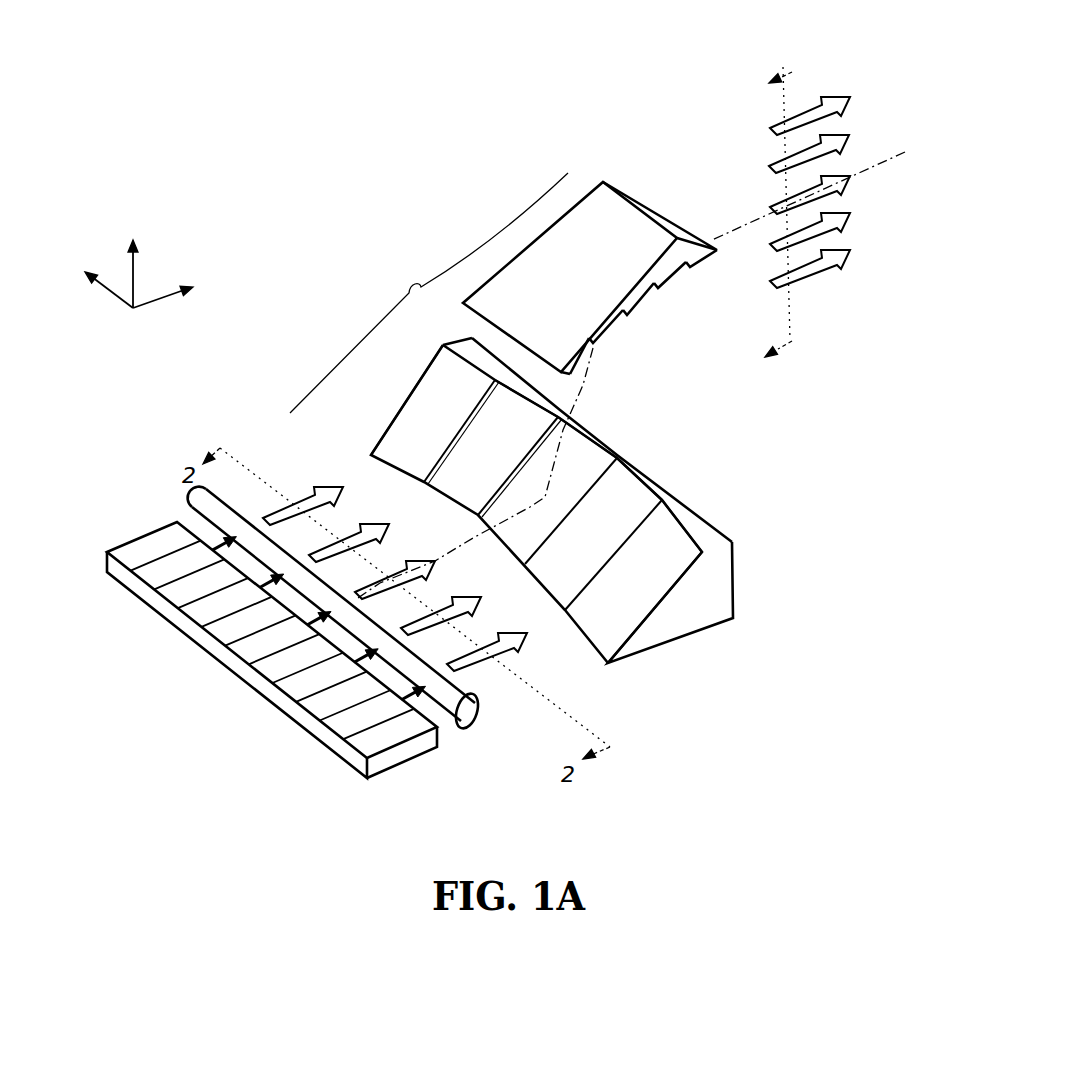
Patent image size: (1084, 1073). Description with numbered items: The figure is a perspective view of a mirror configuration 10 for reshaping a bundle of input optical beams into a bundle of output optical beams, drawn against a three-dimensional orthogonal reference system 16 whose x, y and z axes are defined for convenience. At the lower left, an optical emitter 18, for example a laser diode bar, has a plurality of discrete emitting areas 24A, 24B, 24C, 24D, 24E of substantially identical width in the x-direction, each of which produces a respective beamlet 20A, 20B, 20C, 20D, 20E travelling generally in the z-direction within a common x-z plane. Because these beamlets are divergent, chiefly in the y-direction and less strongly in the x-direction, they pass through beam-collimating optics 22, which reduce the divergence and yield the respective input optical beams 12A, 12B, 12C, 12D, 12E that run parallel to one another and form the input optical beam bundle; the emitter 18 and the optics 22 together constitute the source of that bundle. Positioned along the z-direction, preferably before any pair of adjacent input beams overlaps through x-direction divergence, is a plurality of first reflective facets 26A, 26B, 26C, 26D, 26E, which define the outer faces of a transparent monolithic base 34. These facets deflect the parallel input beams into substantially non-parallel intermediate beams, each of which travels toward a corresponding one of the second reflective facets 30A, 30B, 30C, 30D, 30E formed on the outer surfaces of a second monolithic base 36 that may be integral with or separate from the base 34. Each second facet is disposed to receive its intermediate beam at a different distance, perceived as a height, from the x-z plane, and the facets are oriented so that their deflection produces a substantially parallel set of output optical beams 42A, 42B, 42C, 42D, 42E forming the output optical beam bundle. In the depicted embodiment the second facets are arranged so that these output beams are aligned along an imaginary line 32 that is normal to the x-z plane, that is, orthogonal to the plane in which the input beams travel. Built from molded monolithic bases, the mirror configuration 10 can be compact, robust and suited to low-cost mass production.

The mirror configuration 10 is at (429, 293).
The input optical beam 12A is at (329, 487).
The input optical beam 12B is at (375, 524).
The input optical beam 12C is at (421, 561).
The input optical beam 12D is at (497, 587).
The input optical beam 12E is at (513, 633).
The orthogonal reference system 16 is at (137, 330).
The optical emitter 18 is at (157, 540).
The beamlet 20A is at (152, 578).
The beamlet 20B is at (200, 618).
The beamlet 20C is at (243, 653).
The beamlet 20D is at (290, 693).
The beamlet 20E is at (340, 730).
The beam-collimating optics 22 is at (466, 704).
The emitting area 24A is at (214, 548).
The emitting area 24B is at (261, 585).
The emitting area 24C is at (309, 623).
The emitting area 24D is at (356, 660).
The emitting area 24E is at (403, 698).
The first reflective facet 26A is at (460, 377).
The first reflective facet 26B is at (495, 437).
The first reflective facet 26C is at (570, 462).
The first reflective facet 26D is at (617, 498).
The first reflective facet 26E is at (670, 540).
The second reflective facet 30A is at (703, 261).
The second reflective facet 30B is at (672, 278).
The second reflective facet 30C is at (640, 302).
The second reflective facet 30D is at (608, 329).
The second reflective facet 30E is at (580, 359).
The imaginary line 32 is at (783, 98).
The monolithic base 34 is at (741, 636).
The second monolithic base 36 is at (613, 175).
The output optical beam 42A is at (851, 96).
The output optical beam 42B is at (850, 134).
The output optical beam 42C is at (851, 177).
The output optical beam 42D is at (851, 212).
The output optical beam 42E is at (851, 249).